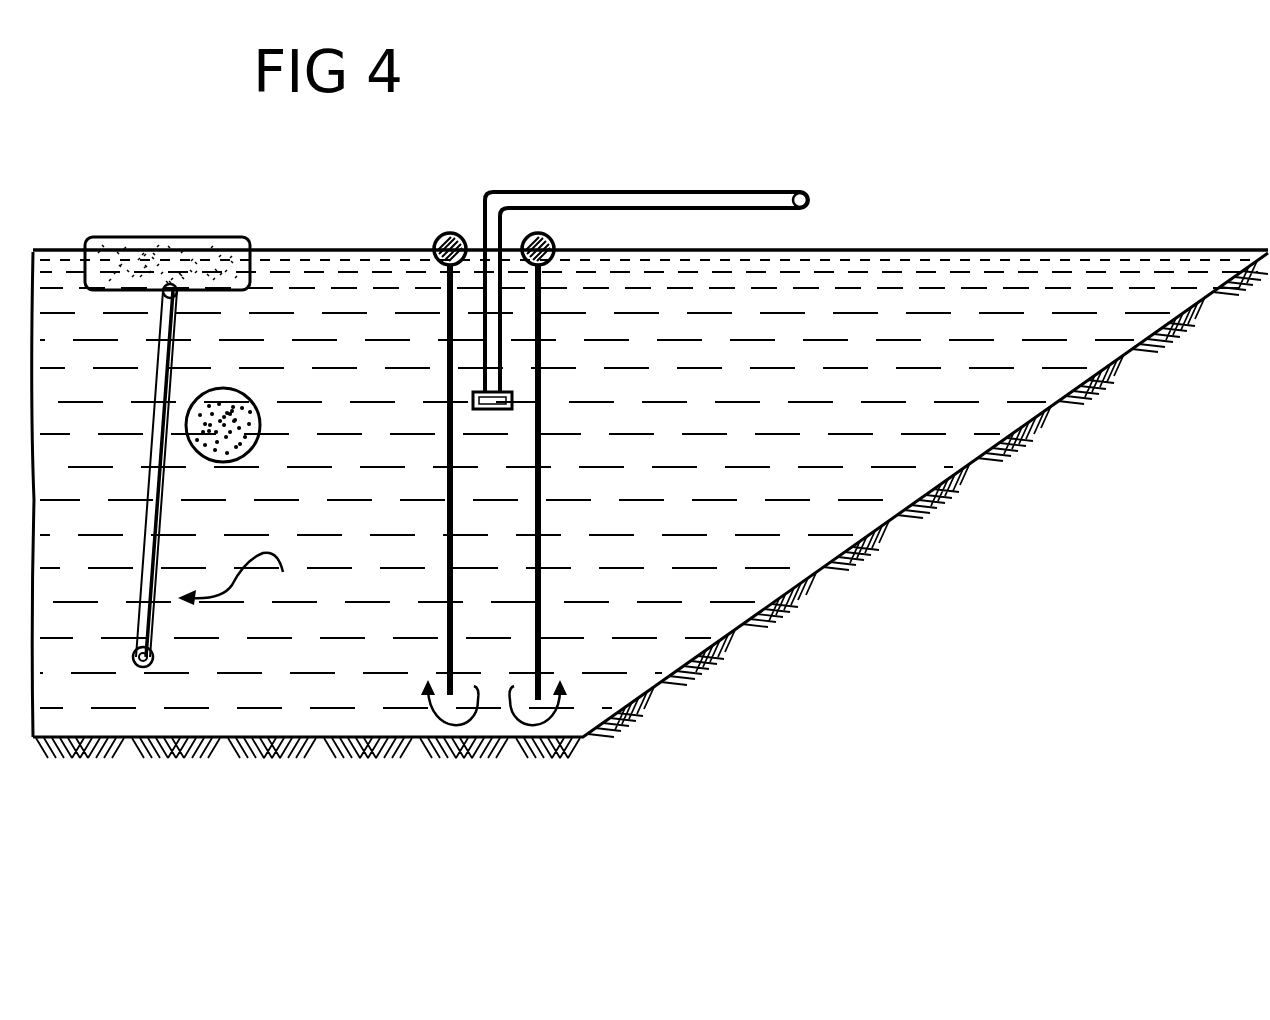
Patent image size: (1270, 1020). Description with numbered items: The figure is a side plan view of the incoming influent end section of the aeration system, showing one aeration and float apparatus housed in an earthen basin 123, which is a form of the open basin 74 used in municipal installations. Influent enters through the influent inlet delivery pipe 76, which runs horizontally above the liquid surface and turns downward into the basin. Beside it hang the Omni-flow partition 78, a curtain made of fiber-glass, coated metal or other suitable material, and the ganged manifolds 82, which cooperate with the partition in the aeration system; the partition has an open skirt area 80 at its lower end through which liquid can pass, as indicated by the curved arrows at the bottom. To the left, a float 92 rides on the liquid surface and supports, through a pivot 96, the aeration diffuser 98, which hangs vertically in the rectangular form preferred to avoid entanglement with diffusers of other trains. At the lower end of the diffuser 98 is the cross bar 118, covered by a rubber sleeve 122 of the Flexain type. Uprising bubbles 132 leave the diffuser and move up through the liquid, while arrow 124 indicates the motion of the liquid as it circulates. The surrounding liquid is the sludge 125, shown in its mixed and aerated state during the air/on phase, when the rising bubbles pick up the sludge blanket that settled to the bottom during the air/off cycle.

The open basin 74 is at (566, 466).
The influent inlet delivery pipe 76 is at (720, 208).
The Omni-flow partition 78 is at (445, 534).
The open skirt area 80 is at (494, 693).
The ganged manifolds 82 is at (495, 410).
The float 92 is at (250, 272).
The pivot 96 is at (176, 298).
The aeration diffuser 98 is at (150, 448).
The cross bar 118 is at (138, 666).
The rubber sleeve 122 is at (152, 660).
The earthen basin 123 is at (795, 595).
The flow direction arrow 124 is at (245, 582).
The sludge 125 is at (650, 493).
The uprising bubbles 132 is at (262, 417).